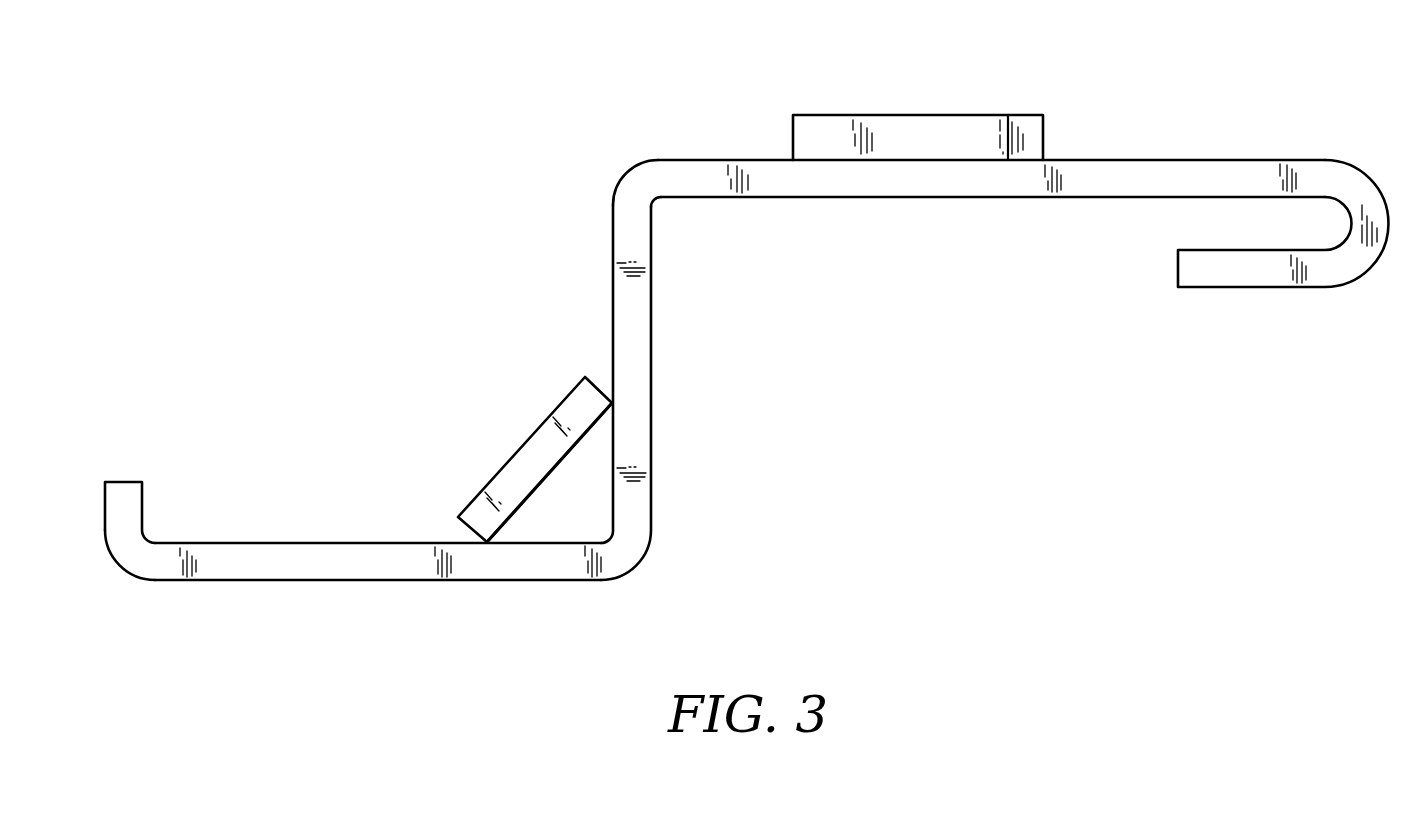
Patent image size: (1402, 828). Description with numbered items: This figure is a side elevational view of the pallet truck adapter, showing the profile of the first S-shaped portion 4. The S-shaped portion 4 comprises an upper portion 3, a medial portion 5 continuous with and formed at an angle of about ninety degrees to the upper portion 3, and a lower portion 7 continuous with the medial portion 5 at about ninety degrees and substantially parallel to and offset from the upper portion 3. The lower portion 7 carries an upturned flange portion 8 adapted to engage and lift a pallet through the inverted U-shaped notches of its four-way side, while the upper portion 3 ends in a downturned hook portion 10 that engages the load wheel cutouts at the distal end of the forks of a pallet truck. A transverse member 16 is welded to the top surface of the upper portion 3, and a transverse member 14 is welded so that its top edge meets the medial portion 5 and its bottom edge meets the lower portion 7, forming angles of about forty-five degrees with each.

The upper portion 3 is at (1112, 160).
The first S-shaped portion 4 is at (623, 180).
The medial portion 5 is at (652, 322).
The lower portion 7 is at (322, 580).
The upturned flange portion 8 is at (142, 497).
The downturned hook portion 10 is at (1243, 287).
The transverse member 14 is at (530, 440).
The transverse member 16 is at (910, 115).